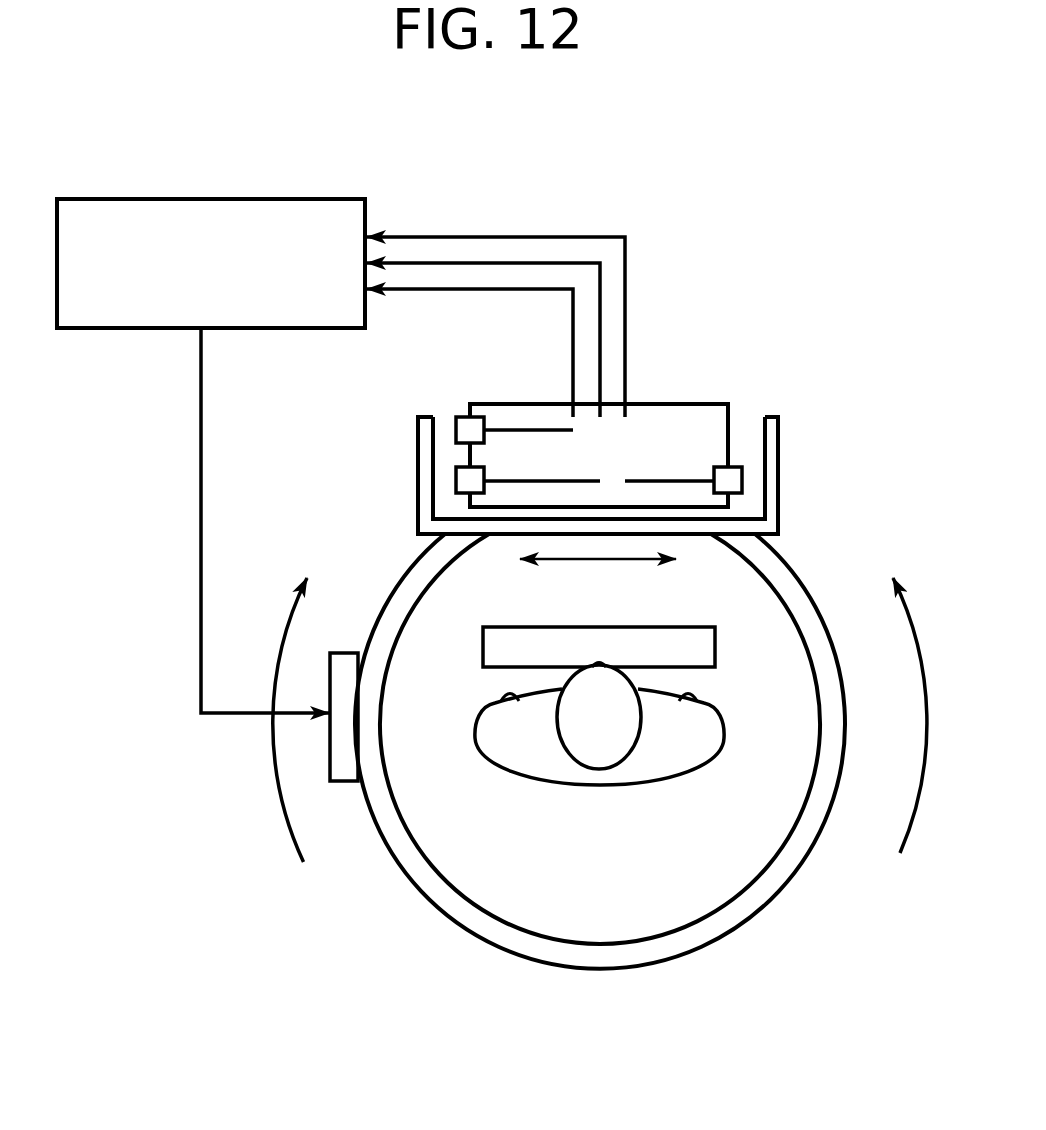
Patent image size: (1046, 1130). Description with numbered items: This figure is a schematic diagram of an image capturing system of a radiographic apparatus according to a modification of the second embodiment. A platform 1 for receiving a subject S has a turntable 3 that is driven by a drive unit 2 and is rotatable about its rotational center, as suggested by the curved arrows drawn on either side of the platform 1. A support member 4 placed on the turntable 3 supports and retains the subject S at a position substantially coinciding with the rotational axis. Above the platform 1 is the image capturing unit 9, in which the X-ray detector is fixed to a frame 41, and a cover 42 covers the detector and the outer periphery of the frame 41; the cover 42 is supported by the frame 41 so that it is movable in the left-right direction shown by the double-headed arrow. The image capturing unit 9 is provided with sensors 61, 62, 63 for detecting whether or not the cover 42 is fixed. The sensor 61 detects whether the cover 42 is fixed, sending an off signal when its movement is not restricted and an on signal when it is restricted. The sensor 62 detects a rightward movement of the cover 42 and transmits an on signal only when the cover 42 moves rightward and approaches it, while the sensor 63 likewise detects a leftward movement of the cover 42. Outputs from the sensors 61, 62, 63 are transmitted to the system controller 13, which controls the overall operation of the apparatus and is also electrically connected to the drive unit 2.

The platform 1 is at (497, 938).
The drive unit 2 is at (338, 760).
The turntable 3 is at (458, 845).
The support member 4 is at (708, 643).
The image capturing unit 9 is at (626, 400).
The system controller 13 is at (216, 212).
The frame 41 is at (687, 418).
The cover 42 is at (772, 455).
The sensor 61 is at (467, 425).
The sensor 62 is at (465, 475).
The sensor 63 is at (735, 470).
The subject S is at (668, 759).